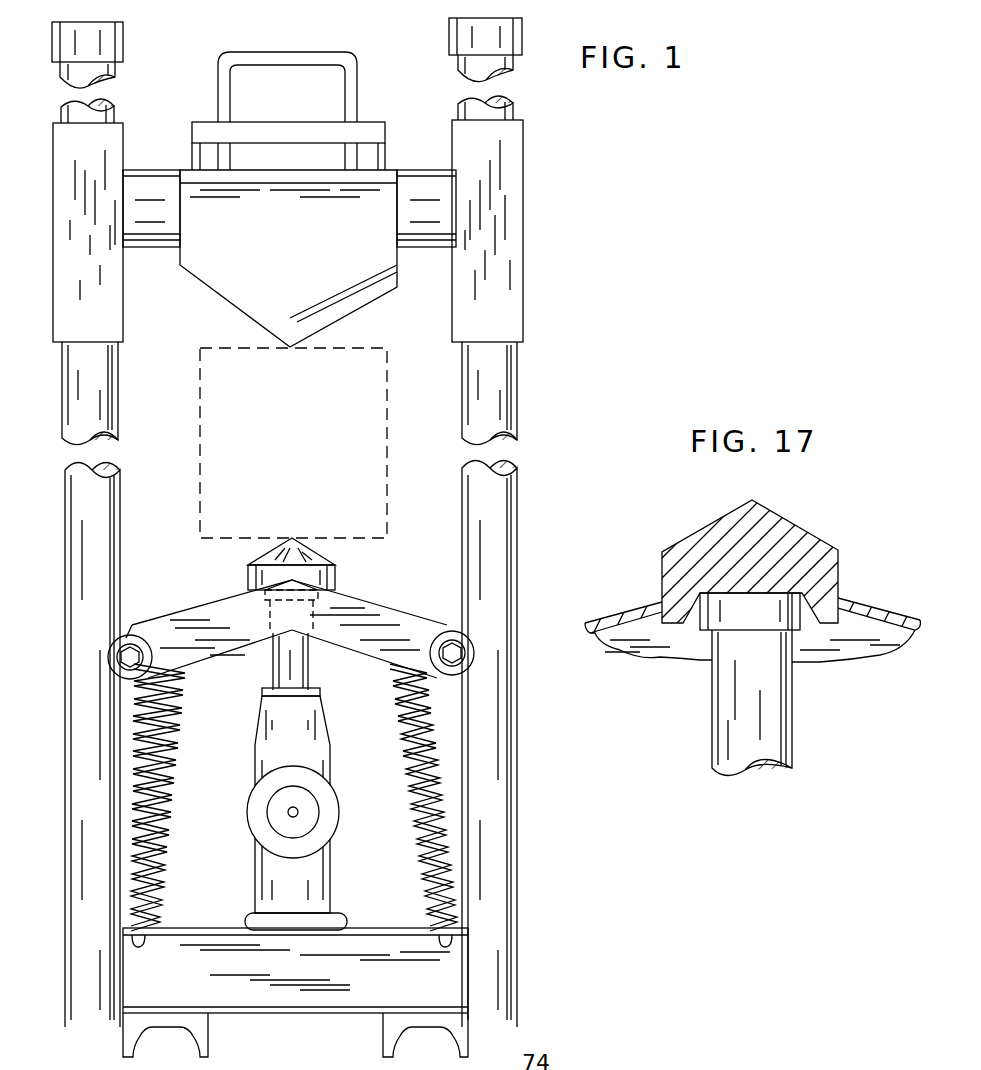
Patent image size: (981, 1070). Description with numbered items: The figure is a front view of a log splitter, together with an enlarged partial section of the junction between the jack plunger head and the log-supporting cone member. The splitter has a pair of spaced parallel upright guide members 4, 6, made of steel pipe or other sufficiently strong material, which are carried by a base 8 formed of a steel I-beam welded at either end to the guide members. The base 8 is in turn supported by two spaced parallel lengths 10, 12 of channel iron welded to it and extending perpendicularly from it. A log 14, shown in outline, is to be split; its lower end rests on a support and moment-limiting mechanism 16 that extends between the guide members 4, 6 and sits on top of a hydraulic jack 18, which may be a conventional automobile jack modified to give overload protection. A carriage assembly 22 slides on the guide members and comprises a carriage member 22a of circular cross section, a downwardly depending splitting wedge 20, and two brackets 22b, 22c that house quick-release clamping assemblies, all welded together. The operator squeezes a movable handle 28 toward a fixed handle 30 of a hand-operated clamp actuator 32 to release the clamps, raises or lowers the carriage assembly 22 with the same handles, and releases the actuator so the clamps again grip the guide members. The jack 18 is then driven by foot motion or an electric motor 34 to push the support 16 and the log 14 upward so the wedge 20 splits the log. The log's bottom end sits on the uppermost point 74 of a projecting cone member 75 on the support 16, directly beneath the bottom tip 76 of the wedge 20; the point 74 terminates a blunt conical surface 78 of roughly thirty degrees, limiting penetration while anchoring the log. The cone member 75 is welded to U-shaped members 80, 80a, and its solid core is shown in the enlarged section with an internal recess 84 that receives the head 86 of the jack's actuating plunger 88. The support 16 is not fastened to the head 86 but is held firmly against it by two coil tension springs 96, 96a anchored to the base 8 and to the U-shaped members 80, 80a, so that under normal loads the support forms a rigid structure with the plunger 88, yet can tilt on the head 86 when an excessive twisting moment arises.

In FIG. 1, the upright guide member 4 is at (105, 488).
In FIG. 1, the upright guide member 6 is at (475, 475).
In FIG. 1, the base 8 is at (393, 928).
In FIG. 1, the channel iron length 10 is at (175, 1022).
In FIG. 1, the channel iron length 12 is at (405, 1020).
In FIG. 1, the log 14 is at (385, 420).
In FIG. 1, the support and moment-limiting mechanism 16 is at (422, 560).
In FIG. 1, the hydraulic jack 18 is at (318, 730).
In FIG. 1, the splitting wedge 20 is at (230, 277).
In FIG. 1, the carriage assembly 22 is at (289, 140).
In FIG. 1, the carriage member 22a is at (150, 190).
In FIG. 1, the bracket 22b is at (110, 136).
In FIG. 1, the bracket 22c is at (510, 190).
In FIG. 1, the movable handle 28 is at (314, 58).
In FIG. 1, the fixed handle 30 is at (297, 132).
In FIG. 1, the clamp actuator 32 is at (268, 95).
In FIG. 1, the electric motor 34 is at (255, 822).
In FIG. 1, the uppermost point 74 is at (292, 538).
In FIG. 17, the uppermost point 74 is at (752, 500).
In FIG. 1, the cone member 75 is at (269, 561).
In FIG. 17, the cone member 75 is at (740, 588).
In FIG. 1, the bottom tip 76 is at (290, 350).
In FIG. 1, the conical surface 78 is at (335, 552).
In FIG. 1, the U-shaped member 80 is at (200, 615).
In FIG. 1, the U-shaped member 80a is at (402, 615).
In FIG. 17, the head recess 84 is at (712, 600).
In FIG. 1, the head 86 is at (291, 606).
In FIG. 17, the head 86 is at (712, 620).
In FIG. 1, the actuating plunger 88 is at (285, 665).
In FIG. 17, the actuating plunger 88 is at (730, 688).
In FIG. 1, the coil tension spring 96 is at (172, 770).
In FIG. 1, the coil tension spring 96a is at (412, 763).